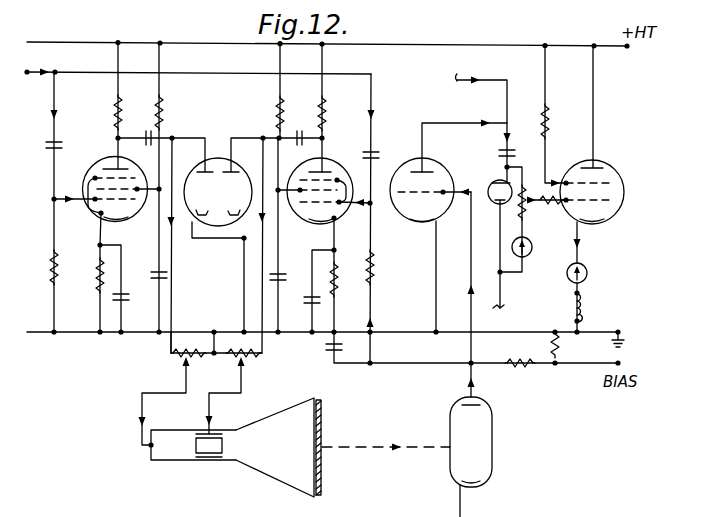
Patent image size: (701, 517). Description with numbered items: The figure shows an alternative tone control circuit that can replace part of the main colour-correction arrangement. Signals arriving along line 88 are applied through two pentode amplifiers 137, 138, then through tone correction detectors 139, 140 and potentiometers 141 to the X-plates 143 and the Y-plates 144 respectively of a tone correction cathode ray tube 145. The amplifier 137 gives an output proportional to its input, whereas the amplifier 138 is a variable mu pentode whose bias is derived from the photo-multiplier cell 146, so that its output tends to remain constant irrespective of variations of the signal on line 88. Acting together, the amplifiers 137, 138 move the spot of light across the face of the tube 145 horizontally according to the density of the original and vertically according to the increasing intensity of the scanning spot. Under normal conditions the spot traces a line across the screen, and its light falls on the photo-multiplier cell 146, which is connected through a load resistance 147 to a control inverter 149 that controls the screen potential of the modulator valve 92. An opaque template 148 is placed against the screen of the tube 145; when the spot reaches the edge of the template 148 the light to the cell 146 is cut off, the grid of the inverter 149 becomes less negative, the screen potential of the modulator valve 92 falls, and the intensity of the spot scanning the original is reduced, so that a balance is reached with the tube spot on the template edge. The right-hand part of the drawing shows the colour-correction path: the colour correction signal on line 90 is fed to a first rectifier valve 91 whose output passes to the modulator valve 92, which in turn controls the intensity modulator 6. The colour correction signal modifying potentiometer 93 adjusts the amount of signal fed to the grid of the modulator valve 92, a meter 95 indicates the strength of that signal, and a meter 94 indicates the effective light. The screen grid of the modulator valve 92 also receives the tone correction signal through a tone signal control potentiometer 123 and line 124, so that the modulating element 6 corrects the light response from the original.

The line 88 is at (36, 71).
The pentode amplifier 137 is at (112, 220).
The tone correction detector 139 is at (200, 176).
The tone correction detector 140 is at (236, 176).
The variable mu pentode amplifier 138 is at (320, 223).
The control inverter 149 is at (422, 224).
The line 124 is at (451, 127).
The line 90 is at (493, 80).
The tone signal control potentiometer 123 is at (537, 122).
The first rectifier valve 91 is at (494, 189).
The colour correction signal modifying potentiometer 93 is at (527, 204).
The meter 95 is at (530, 252).
The modulator valve 92 is at (592, 160).
The meter 94 is at (585, 279).
The intensity modulator 6 is at (592, 322).
The load resistance 147 is at (517, 366).
The photo-multiplier cell 146 is at (493, 460).
The potentiometer 141 is at (188, 368).
The X-plates 143 is at (200, 450).
The Y-plates 144 is at (215, 437).
The tone correction cathode ray tube 145 is at (303, 404).
The opaque template 148 is at (323, 421).